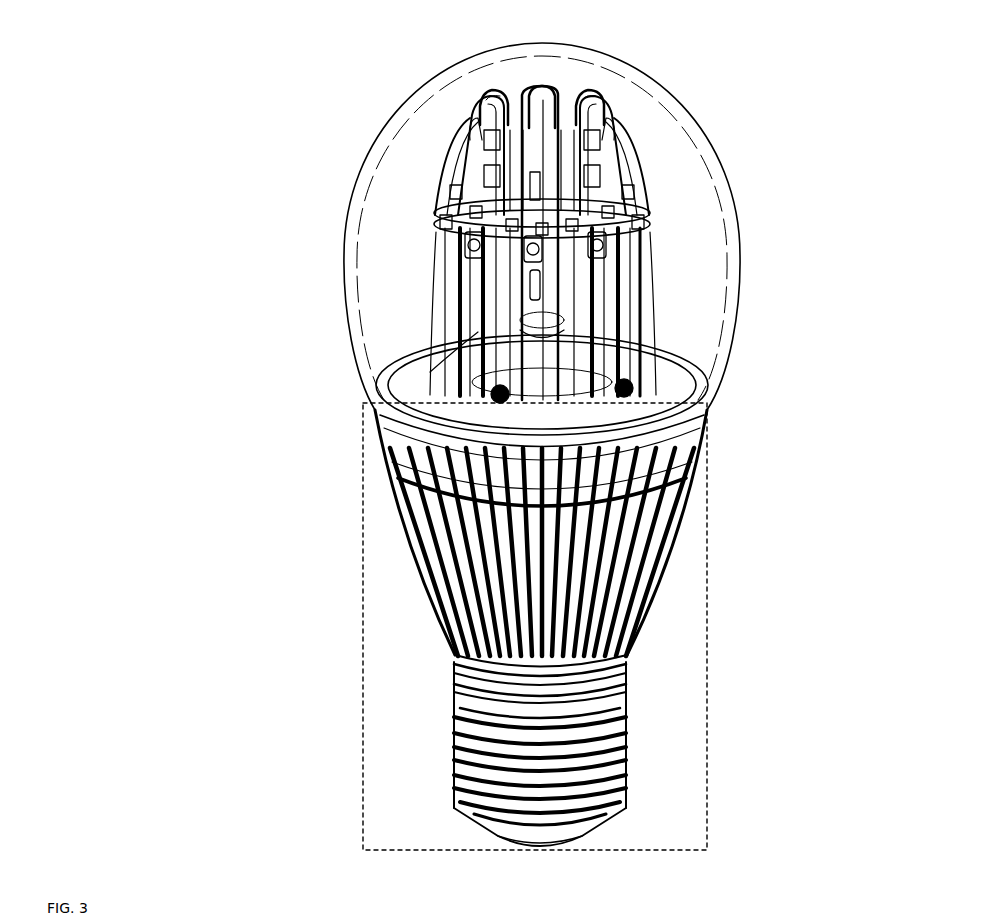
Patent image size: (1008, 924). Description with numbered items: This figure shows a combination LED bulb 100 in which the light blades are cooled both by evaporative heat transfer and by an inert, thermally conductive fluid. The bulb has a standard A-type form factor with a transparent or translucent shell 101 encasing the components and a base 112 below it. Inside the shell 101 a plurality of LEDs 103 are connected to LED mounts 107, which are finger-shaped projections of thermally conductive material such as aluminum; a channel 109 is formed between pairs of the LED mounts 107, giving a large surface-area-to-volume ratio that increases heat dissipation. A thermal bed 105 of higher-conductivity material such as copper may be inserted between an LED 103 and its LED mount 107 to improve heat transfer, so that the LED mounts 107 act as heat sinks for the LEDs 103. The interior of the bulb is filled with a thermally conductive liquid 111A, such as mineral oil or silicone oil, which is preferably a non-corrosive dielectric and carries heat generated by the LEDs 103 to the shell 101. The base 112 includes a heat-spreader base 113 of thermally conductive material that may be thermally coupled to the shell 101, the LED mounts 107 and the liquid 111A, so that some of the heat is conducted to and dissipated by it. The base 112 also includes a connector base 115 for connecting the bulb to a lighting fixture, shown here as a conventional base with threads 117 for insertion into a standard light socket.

The LED bulb 100 is at (108, 117).
The shell 101 is at (383, 143).
The LEDs 103 is at (432, 235).
The thermal bed 105 is at (612, 170).
The LED mounts 107 is at (483, 110).
The channel 109 is at (545, 323).
The thermally conductive liquid 111A is at (675, 253).
The base 112 is at (363, 553).
The heat-spreader base 113 is at (648, 572).
The connector base 115 is at (453, 688).
The threads 117 is at (452, 715).